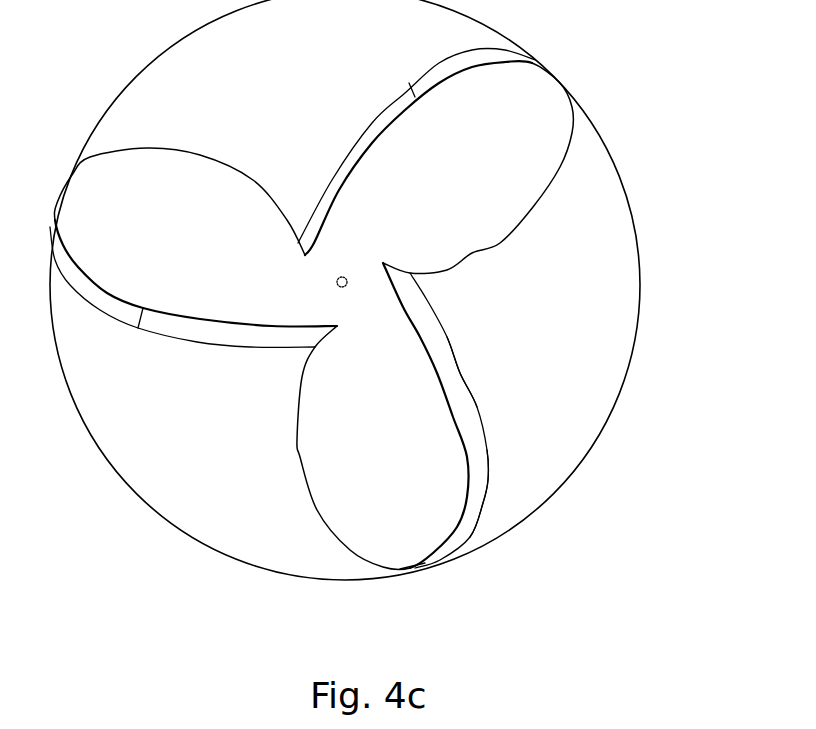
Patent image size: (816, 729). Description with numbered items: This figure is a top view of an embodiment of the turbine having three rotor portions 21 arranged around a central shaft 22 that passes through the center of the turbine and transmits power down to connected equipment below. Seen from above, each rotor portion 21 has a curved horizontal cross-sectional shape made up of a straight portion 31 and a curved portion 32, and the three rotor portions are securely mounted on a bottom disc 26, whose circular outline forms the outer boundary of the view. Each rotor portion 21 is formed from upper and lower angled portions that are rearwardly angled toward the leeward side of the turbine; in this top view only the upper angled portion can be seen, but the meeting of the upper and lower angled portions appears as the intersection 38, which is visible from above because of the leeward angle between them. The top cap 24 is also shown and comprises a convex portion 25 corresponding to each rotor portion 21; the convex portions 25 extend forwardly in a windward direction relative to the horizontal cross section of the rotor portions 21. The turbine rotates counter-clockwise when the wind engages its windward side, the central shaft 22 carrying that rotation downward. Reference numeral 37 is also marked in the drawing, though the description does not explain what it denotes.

The rotor portion 21 is at (364, 98).
The central shaft 22 is at (344, 277).
The top cap 24 is at (393, 312).
The convex portion 25 is at (300, 455).
The bottom disc 26 is at (628, 267).
The straight portion 31 is at (458, 373).
The curved portion 32 is at (489, 499).
The outer end 37 is at (413, 567).
The intersection 38 is at (475, 407).